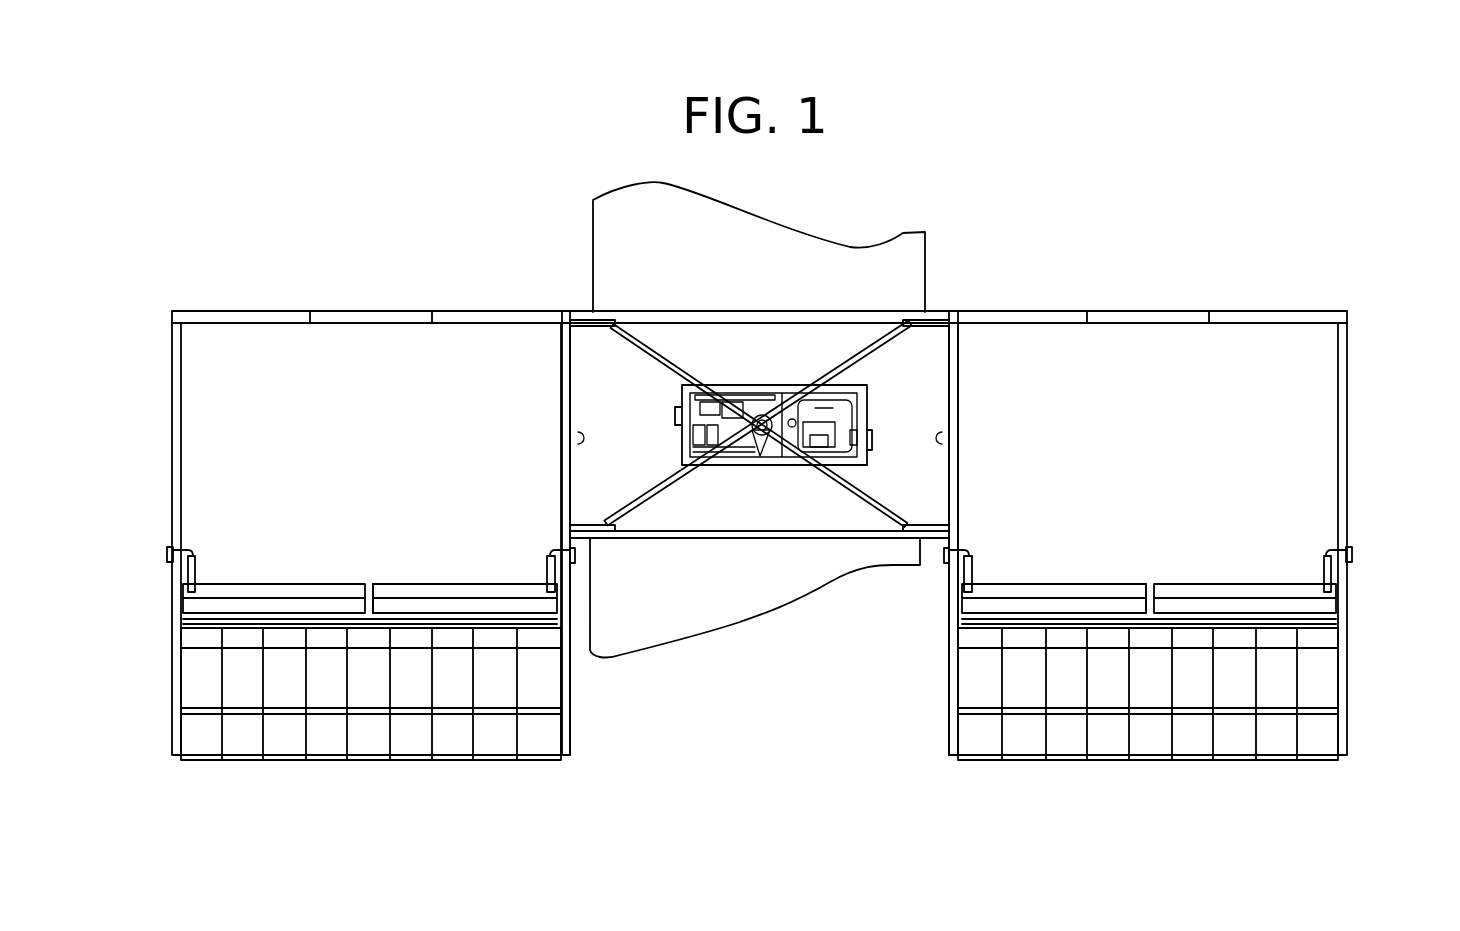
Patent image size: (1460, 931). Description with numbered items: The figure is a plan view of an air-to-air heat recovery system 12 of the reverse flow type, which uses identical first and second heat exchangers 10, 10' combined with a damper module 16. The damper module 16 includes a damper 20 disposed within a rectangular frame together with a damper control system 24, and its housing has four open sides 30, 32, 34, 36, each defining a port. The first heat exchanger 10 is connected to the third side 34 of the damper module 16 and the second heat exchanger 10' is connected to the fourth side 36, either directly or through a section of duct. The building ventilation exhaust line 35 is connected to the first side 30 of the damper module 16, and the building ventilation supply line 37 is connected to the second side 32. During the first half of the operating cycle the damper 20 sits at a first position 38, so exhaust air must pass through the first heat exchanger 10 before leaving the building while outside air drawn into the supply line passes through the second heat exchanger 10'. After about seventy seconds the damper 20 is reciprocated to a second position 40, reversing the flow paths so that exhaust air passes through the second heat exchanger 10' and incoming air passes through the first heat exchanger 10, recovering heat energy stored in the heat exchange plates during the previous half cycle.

The first heat exchanger 10 is at (322, 539).
The second heat exchanger 10' is at (1201, 539).
The air-to-air heat recovery system 12 is at (1003, 277).
The damper module 16 is at (797, 307).
The damper 20 is at (681, 479).
The damper control system 24 is at (668, 398).
The first side 30 is at (724, 538).
The second side 32 is at (663, 314).
The third side 34 is at (578, 438).
The building ventilation exhaust line 35 is at (677, 633).
The fourth side 36 is at (942, 438).
The building ventilation supply line 37 is at (593, 200).
The first position 38 is at (665, 352).
The second position 40 is at (858, 356).